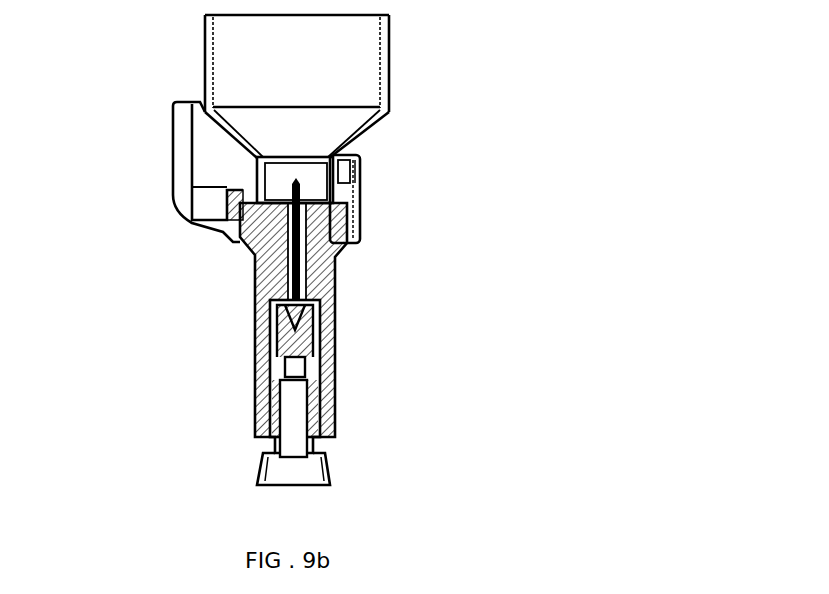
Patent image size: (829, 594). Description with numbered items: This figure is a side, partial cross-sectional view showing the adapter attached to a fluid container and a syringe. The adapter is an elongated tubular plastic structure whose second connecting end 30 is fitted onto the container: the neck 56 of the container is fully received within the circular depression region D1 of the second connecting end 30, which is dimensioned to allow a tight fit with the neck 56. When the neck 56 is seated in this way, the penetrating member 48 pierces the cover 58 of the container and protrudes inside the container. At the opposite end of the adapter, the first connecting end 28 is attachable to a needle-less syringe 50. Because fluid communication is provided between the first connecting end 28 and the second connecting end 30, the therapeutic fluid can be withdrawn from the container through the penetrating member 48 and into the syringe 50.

The second connecting end 30 is at (130, 105).
The neck 56 is at (222, 232).
The penetrating member 48 is at (357, 223).
The circular region D1 is at (358, 172).
The cover 58 is at (343, 250).
The first connecting end 28 is at (337, 378).
The syringe 50 is at (335, 470).